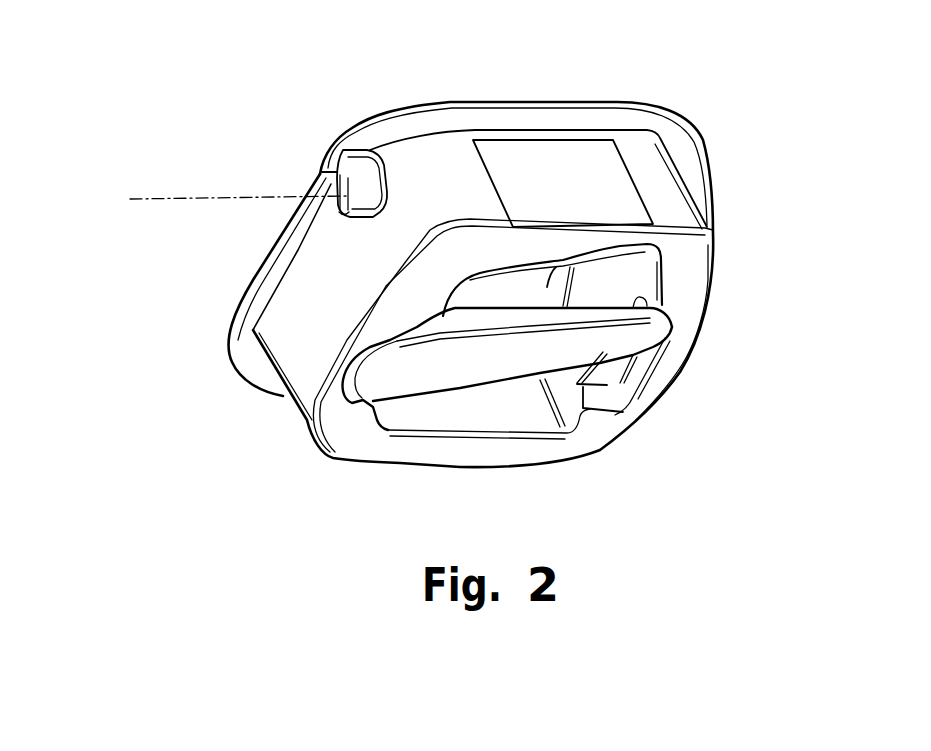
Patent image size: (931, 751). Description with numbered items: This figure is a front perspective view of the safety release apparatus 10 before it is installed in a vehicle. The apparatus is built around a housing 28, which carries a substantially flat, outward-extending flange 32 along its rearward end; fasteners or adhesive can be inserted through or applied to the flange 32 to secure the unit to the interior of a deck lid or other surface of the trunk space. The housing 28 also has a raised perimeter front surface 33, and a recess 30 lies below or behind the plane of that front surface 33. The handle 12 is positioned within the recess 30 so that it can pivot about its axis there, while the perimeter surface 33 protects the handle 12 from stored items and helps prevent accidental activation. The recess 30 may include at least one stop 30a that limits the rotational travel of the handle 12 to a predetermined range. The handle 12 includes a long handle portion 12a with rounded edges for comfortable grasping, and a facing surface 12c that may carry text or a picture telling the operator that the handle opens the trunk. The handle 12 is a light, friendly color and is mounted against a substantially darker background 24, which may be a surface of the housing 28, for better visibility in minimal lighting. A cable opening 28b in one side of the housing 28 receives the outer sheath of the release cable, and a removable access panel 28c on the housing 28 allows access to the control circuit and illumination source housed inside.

The safety release apparatus 10 is at (246, 83).
The handle 12 is at (398, 380).
The handle portion 12a is at (520, 398).
The facing surface 12c is at (448, 382).
The background 24 is at (700, 245).
The housing 28 is at (307, 286).
The cable opening 28b is at (333, 187).
The removable access panel 28c is at (543, 163).
The recess 30 is at (549, 398).
The stop 30a is at (601, 398).
The flange 32 is at (673, 127).
The front surface 33 is at (690, 278).